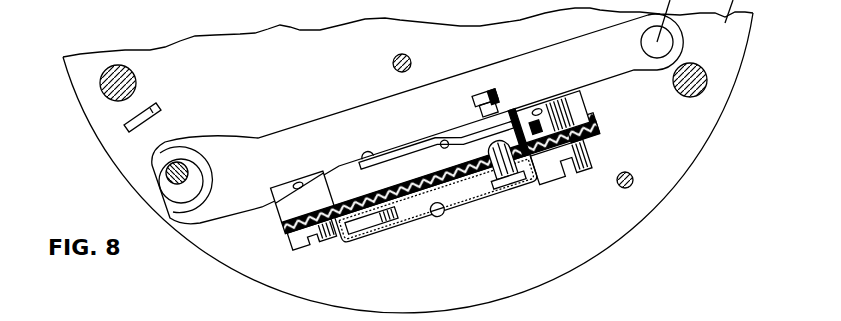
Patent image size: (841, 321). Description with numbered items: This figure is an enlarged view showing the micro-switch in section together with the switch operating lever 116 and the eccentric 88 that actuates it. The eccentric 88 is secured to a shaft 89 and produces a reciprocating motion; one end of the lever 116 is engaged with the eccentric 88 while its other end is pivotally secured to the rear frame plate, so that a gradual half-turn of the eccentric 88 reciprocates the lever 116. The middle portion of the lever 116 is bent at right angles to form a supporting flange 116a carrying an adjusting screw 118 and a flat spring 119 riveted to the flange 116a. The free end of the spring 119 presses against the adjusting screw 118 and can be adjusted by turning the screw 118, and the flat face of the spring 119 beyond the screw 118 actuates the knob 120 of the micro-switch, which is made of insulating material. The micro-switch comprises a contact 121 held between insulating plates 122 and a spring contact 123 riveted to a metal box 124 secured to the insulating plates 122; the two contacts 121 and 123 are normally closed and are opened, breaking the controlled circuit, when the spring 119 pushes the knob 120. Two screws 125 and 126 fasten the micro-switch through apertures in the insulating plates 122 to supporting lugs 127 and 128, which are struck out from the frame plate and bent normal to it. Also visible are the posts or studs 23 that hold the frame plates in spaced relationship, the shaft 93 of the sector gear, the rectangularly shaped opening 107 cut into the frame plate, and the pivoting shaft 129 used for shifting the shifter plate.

The posts or studs 23 is at (130, 80).
The eccentric 88 is at (177, 190).
The shaft 89 is at (170, 172).
The shaft 93 is at (411, 59).
The rectangularly shaped opening 107 is at (161, 108).
The lever 116 is at (331, 113).
The supporting flange 116a is at (390, 152).
The adjusting screw 118 is at (497, 97).
The flat spring 119 is at (442, 152).
The knob 120 is at (495, 153).
The contact 121 is at (350, 235).
The insulating plates 122 is at (592, 136).
The spring contact 123 is at (363, 238).
The metal box 124 is at (485, 207).
The screw 125 is at (303, 243).
The screw 126 is at (563, 167).
The supporting lug 127 is at (290, 207).
The supporting lug 128 is at (583, 120).
The pivoting shaft 129 is at (633, 180).